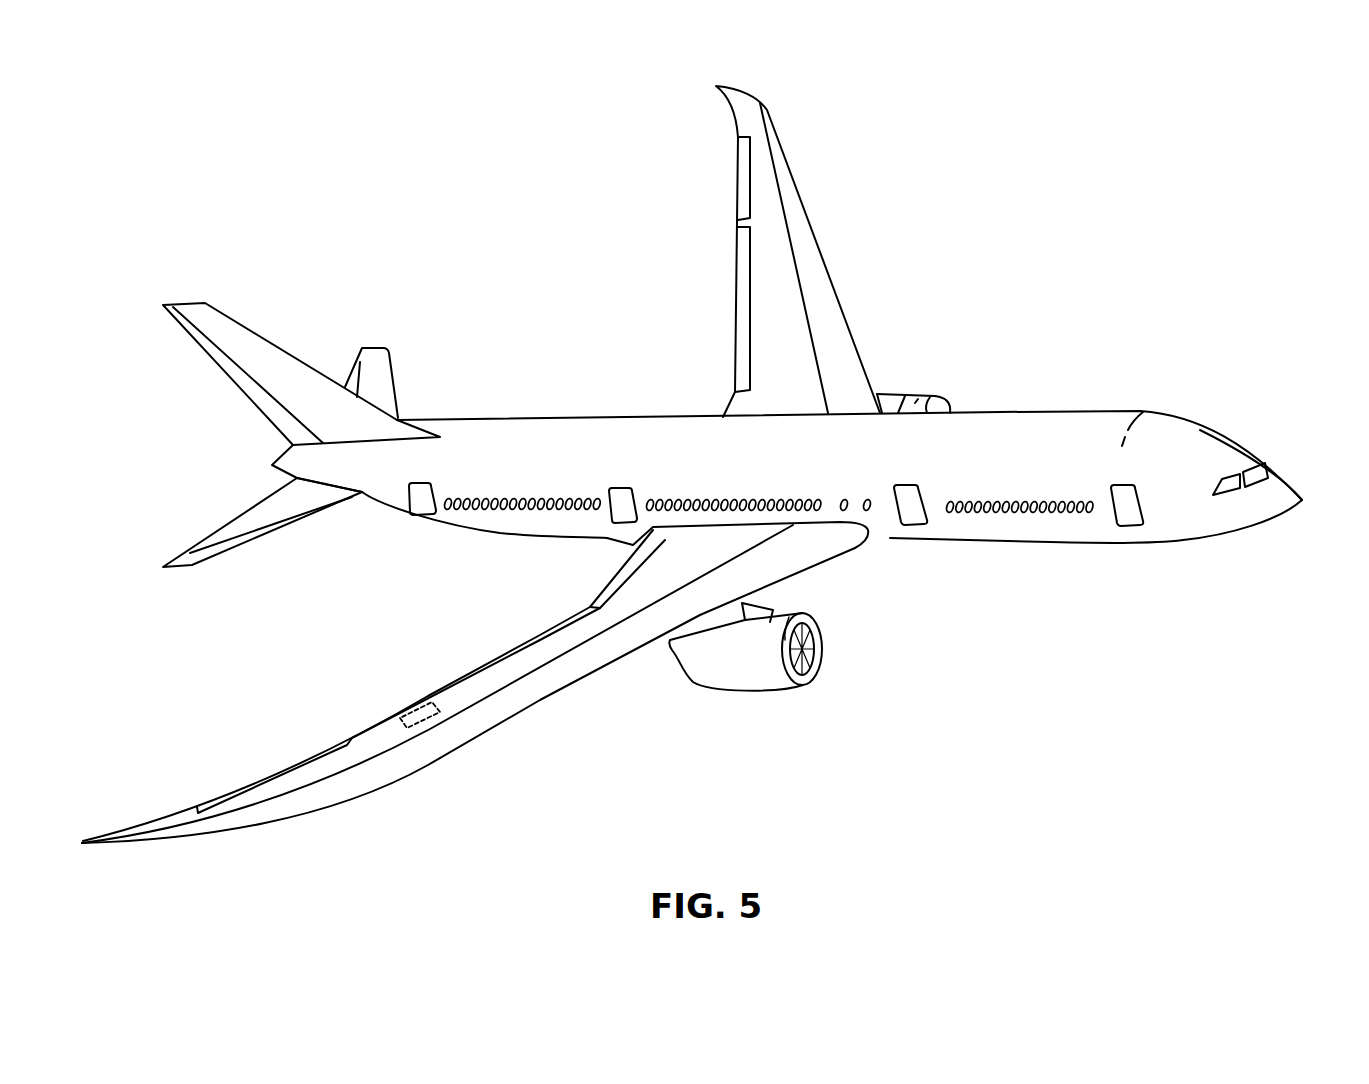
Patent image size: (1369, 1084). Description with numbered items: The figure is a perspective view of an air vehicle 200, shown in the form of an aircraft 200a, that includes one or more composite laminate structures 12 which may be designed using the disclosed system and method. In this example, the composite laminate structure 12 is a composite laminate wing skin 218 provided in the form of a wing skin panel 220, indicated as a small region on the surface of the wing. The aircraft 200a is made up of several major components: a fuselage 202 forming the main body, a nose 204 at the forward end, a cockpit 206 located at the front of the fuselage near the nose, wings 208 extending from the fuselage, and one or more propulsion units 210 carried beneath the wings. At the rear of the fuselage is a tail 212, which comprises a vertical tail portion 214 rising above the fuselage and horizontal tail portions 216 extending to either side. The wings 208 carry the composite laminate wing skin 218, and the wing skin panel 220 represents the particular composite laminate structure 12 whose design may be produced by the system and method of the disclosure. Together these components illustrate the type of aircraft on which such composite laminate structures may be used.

The air vehicle 200 is at (1052, 203).
The aircraft 200a is at (912, 272).
The fuselage 202 is at (1013, 422).
The nose 204 is at (1275, 510).
The cockpit 206 is at (1258, 462).
The wings 208 is at (778, 170).
The propulsion units 210 is at (918, 398).
The tail 212 is at (170, 395).
The vertical tail portion 214 is at (242, 340).
The horizontal tail portions 216 is at (388, 385).
The composite laminate wing skin 218 is at (437, 680).
The wing skin panel 220 is at (423, 705).
The composite laminate structure 12 is at (414, 663).